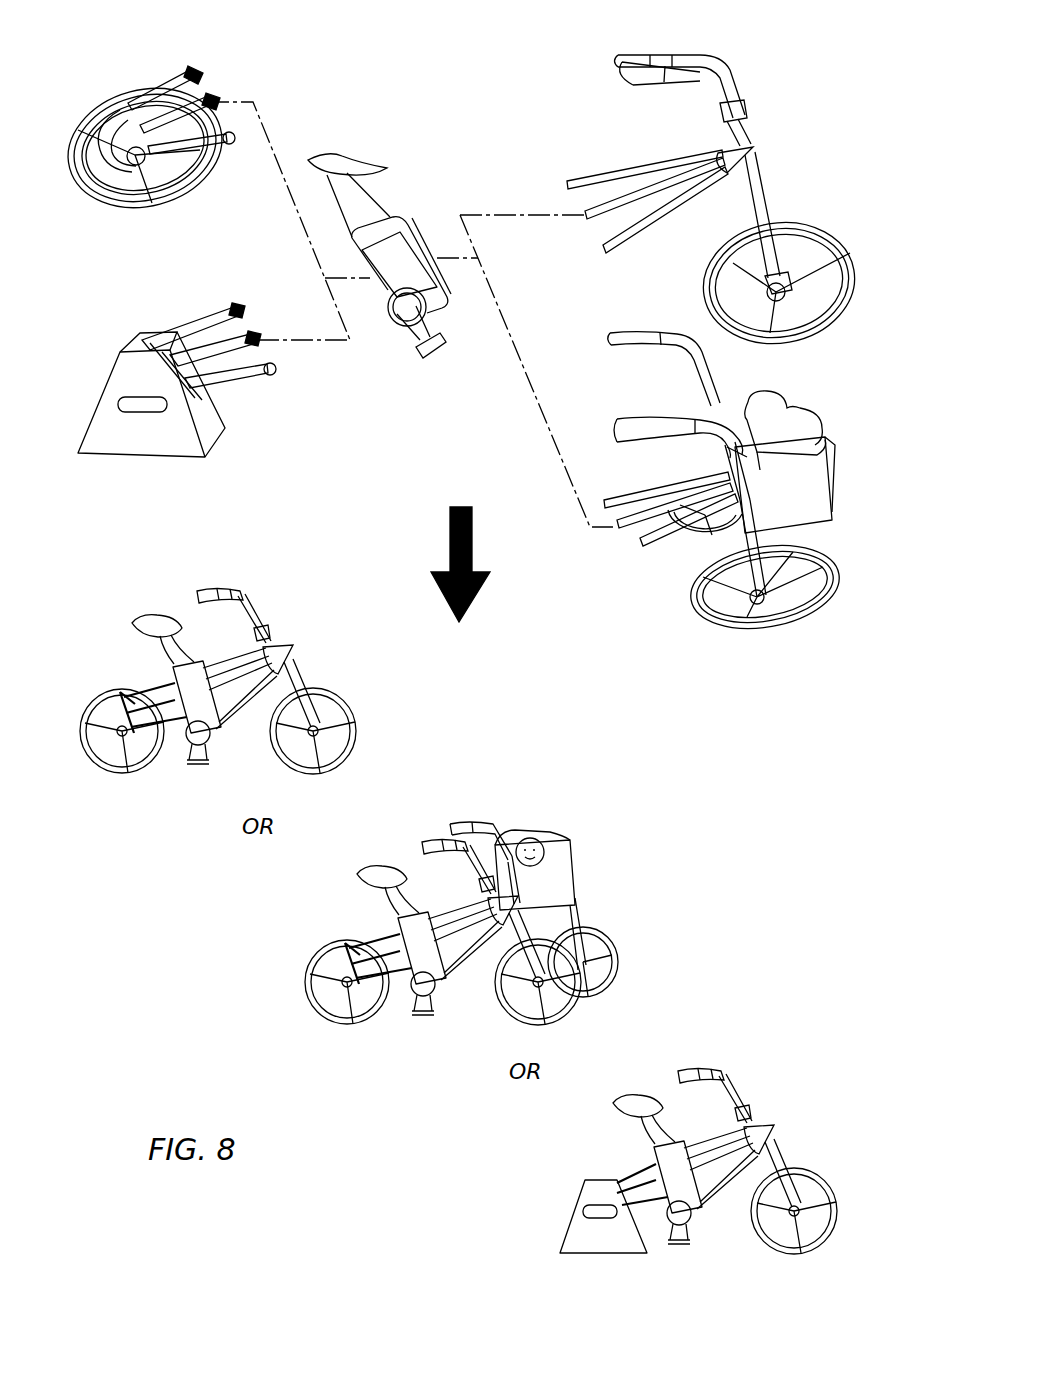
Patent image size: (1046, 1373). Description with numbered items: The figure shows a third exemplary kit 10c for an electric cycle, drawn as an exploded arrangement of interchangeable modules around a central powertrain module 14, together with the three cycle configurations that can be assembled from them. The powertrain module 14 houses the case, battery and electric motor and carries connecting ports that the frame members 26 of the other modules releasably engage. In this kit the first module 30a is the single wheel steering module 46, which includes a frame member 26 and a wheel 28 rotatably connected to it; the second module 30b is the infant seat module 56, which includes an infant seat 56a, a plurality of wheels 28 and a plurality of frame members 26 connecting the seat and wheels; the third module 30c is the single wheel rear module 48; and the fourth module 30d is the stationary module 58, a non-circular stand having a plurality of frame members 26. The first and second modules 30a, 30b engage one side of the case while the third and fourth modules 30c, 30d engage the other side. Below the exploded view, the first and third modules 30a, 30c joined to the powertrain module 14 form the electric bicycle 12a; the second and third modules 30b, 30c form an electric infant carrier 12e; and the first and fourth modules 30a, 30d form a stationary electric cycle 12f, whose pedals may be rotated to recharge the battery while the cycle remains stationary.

The kit 10c is at (822, 62).
The electric bicycle 12a is at (282, 597).
The electric infant carrier 12e is at (603, 812).
The stationary electric cycle 12f is at (763, 1050).
The powertrain module 14 is at (345, 162).
The frame member 26 is at (633, 243).
The wheel 28 is at (815, 332).
The first module 30a is at (705, 45).
The second module 30b is at (618, 315).
The third module 30c is at (200, 37).
The fourth module 30d is at (138, 306).
The single wheel steering module 46 is at (758, 192).
The single wheel rear module 48 is at (108, 198).
The infant seat module 56 is at (790, 617).
The infant seat 56a is at (805, 512).
The stationary module 58 is at (170, 460).